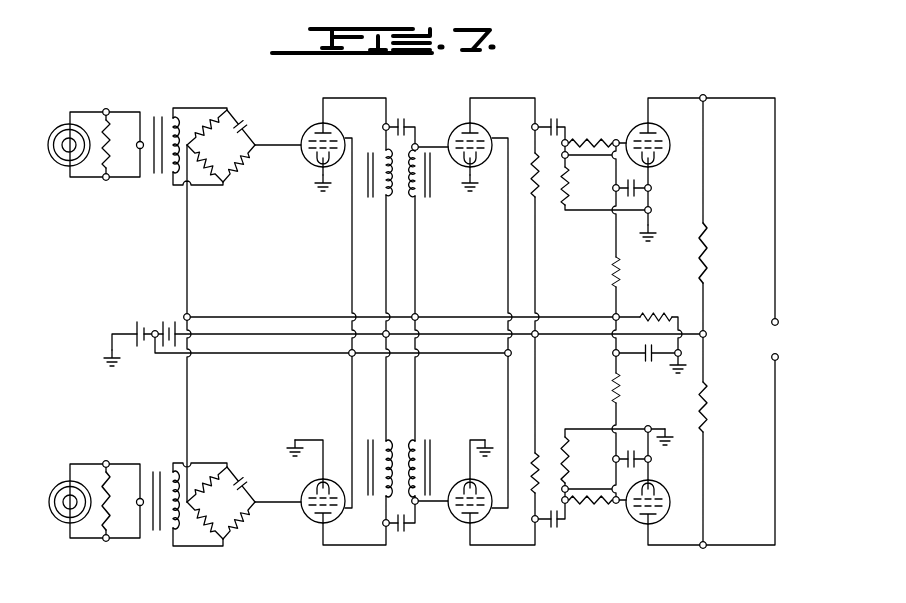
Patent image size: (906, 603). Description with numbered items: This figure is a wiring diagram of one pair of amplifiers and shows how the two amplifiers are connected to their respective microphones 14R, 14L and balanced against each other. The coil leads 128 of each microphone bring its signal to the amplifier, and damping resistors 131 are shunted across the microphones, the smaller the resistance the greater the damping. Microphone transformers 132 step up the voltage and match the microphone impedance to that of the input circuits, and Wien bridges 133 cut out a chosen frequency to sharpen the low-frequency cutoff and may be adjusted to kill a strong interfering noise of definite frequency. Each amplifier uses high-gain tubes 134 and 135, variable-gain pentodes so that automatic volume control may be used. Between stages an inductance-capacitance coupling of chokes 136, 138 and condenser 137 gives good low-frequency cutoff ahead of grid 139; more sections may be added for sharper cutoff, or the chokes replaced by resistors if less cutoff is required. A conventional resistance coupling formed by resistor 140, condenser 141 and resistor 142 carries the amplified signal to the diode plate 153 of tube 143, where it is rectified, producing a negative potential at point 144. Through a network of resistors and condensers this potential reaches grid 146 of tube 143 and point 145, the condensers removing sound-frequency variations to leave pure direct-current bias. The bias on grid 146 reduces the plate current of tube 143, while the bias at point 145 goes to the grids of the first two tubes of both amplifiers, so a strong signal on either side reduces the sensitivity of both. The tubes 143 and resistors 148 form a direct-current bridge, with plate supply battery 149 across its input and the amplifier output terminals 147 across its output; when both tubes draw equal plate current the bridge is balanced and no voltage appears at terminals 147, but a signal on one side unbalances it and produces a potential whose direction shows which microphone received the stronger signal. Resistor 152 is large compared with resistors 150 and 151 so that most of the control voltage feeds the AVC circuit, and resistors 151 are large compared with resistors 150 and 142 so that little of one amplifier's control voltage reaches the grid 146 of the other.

The microphone 14R is at (60, 165).
The microphone 14L is at (57, 523).
The coil leads 128 is at (92, 102).
The damping resistors 131 is at (109, 146).
The microphone transformers 132 is at (155, 117).
The Wien bridges 133 is at (225, 109).
The high-gain tube 134 is at (322, 121).
The high-gain tube 135 is at (467, 117).
The choke 136 is at (378, 200).
The coupling condenser 137 is at (398, 118).
The choke 138 is at (420, 200).
The grid 139 is at (428, 142).
The coupling resistor 140 is at (537, 202).
The coupling condenser 141 is at (552, 120).
The coupling resistor 142 is at (567, 188).
The output tube 143 is at (646, 120).
The point 144 is at (569, 137).
The point 145 is at (618, 315).
The grid 146 is at (625, 138).
The amplifier output terminals 147 is at (789, 340).
The resistors 148 is at (707, 253).
The plate supply battery 149 is at (164, 318).
The resistors 150 is at (594, 322).
The resistors 151 is at (612, 264).
The resistor 152 is at (646, 315).
The diode plate 153 is at (650, 167).